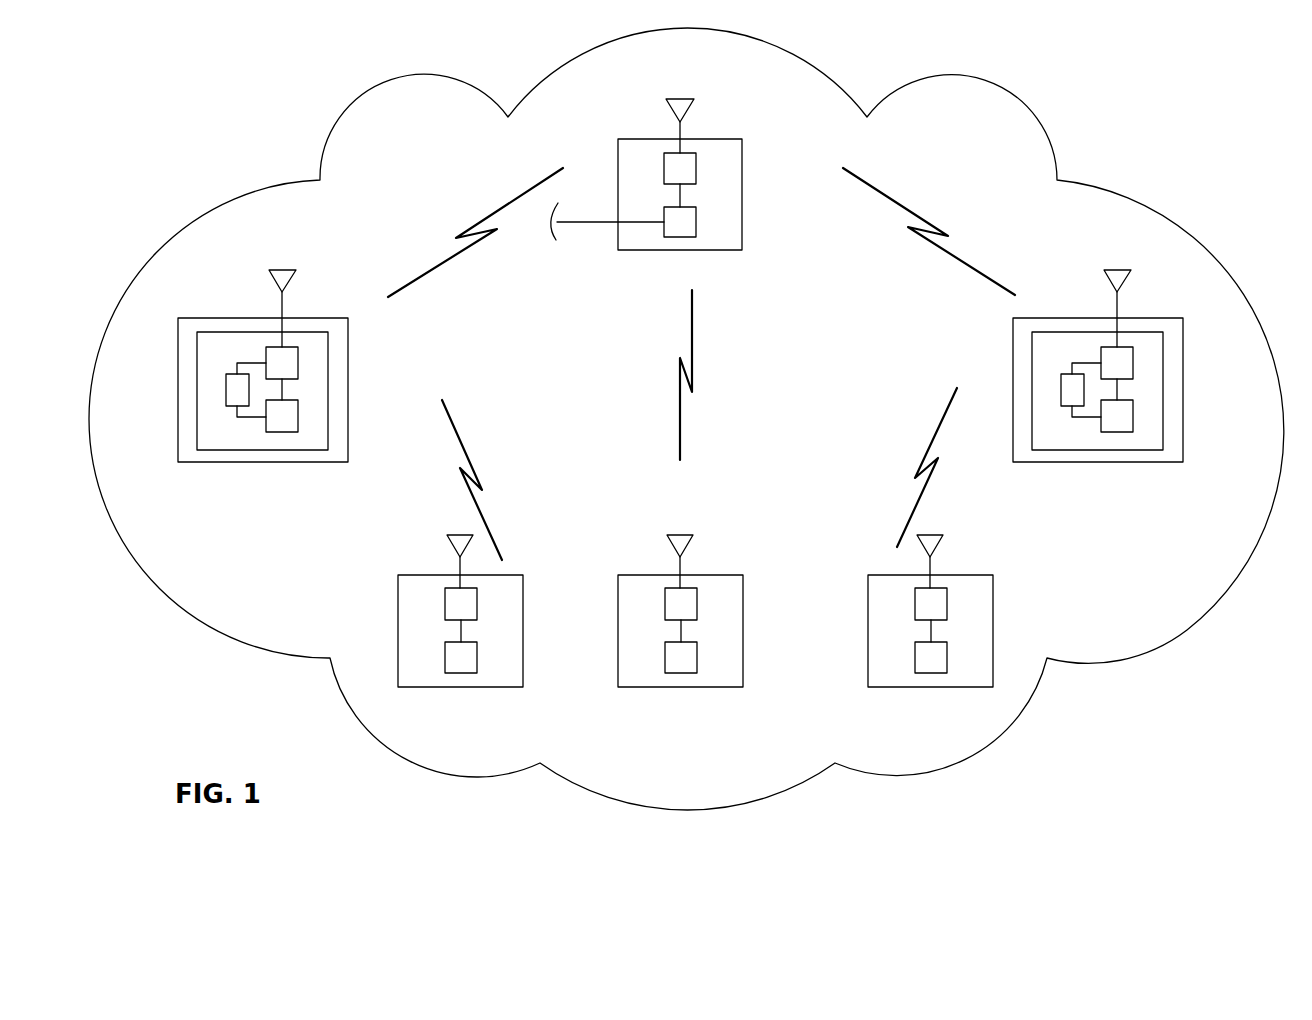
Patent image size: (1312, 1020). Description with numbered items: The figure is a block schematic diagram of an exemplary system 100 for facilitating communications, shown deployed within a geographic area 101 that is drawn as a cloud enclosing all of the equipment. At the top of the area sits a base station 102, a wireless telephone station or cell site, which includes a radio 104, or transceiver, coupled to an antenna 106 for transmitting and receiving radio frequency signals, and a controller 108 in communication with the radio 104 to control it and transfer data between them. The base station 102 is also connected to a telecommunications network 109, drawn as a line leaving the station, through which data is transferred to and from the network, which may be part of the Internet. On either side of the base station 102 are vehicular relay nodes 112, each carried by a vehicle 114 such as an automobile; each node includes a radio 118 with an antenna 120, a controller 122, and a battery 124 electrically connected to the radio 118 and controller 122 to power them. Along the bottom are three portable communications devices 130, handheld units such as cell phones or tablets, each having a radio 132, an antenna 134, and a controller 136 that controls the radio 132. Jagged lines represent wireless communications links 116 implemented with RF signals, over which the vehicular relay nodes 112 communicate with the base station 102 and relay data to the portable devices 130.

The system 100 is at (1201, 154).
The geographic area 101 is at (1188, 630).
The base station 102 is at (743, 195).
The radio 104 is at (697, 167).
The antenna 106 is at (683, 98).
The controller 108 is at (697, 222).
The telecommunications network 109 is at (590, 222).
The vehicular relay node 112 is at (329, 419).
The vehicle 114 is at (349, 390).
The communications link 116 is at (475, 222).
The radio 118 is at (298, 363).
The antenna 120 is at (283, 268).
The controller 122 is at (283, 432).
The battery 124 is at (226, 392).
The portable communications device 130 is at (460, 688).
The radio 132 is at (477, 603).
The antenna 134 is at (450, 543).
The controller 136 is at (477, 658).